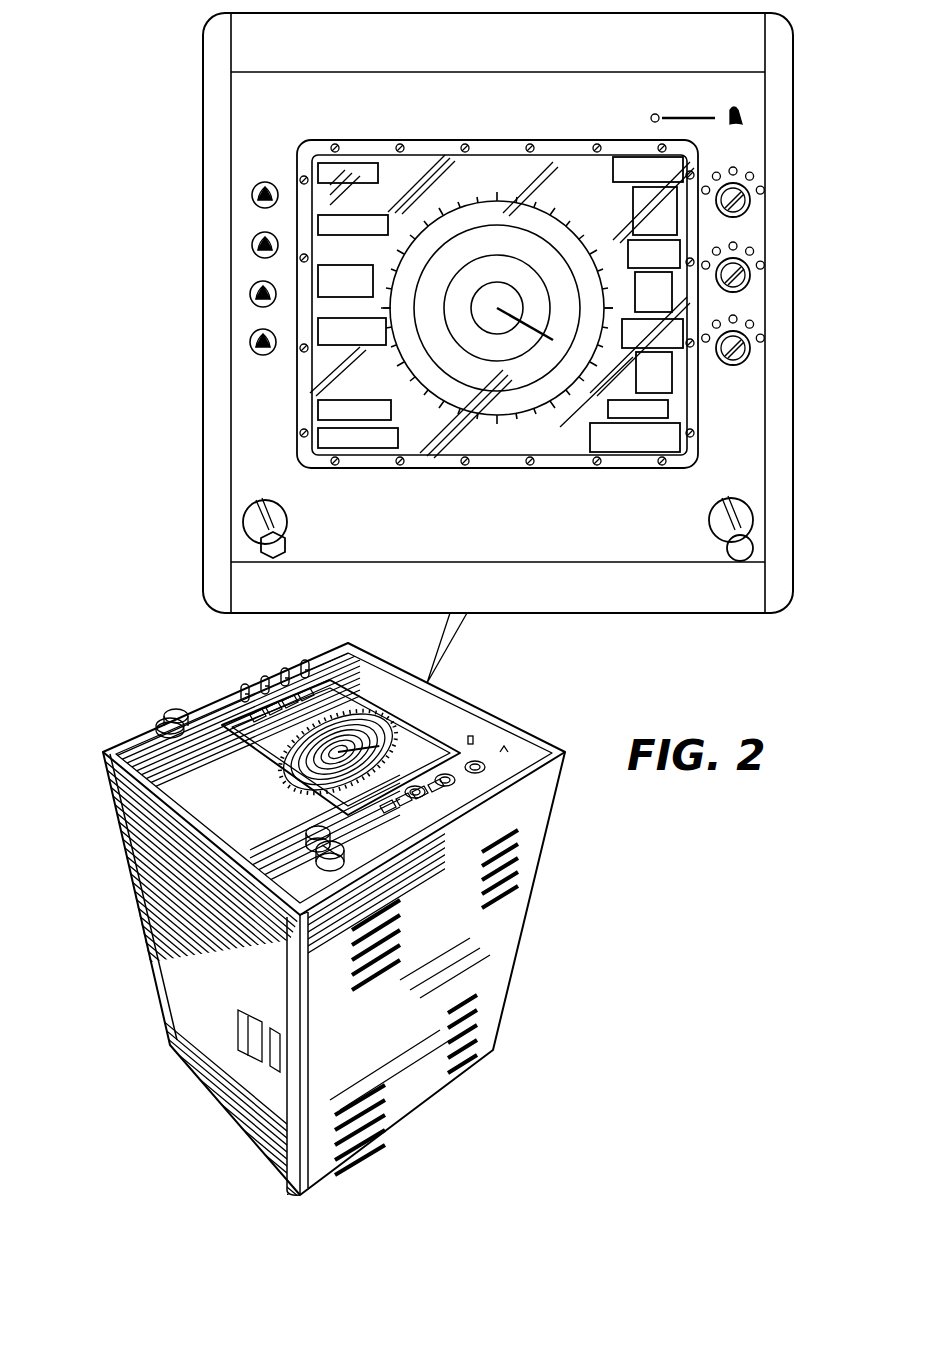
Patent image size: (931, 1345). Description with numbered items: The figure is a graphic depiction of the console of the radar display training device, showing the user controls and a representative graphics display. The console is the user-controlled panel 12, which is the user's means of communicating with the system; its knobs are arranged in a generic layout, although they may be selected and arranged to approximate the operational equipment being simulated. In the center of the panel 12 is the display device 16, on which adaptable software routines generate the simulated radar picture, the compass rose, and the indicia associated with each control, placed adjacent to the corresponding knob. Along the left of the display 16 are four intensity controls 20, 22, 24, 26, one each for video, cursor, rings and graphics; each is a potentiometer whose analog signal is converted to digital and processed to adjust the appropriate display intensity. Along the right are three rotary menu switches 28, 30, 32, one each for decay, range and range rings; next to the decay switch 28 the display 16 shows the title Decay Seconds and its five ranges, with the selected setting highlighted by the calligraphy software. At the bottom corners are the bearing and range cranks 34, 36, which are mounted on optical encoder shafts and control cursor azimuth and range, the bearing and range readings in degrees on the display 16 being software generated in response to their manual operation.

The user-controlled panel 12 is at (231, 105).
The display device 16 is at (305, 407).
The video intensity control 20 is at (252, 197).
The cursor intensity control 22 is at (252, 247).
The rings intensity control 24 is at (250, 297).
The graphics intensity control 26 is at (250, 344).
The decay switch 28 is at (750, 205).
The range switch 30 is at (750, 278).
The range rings switch 32 is at (750, 347).
The bearing crank 34 is at (745, 522).
The range crank 36 is at (245, 525).